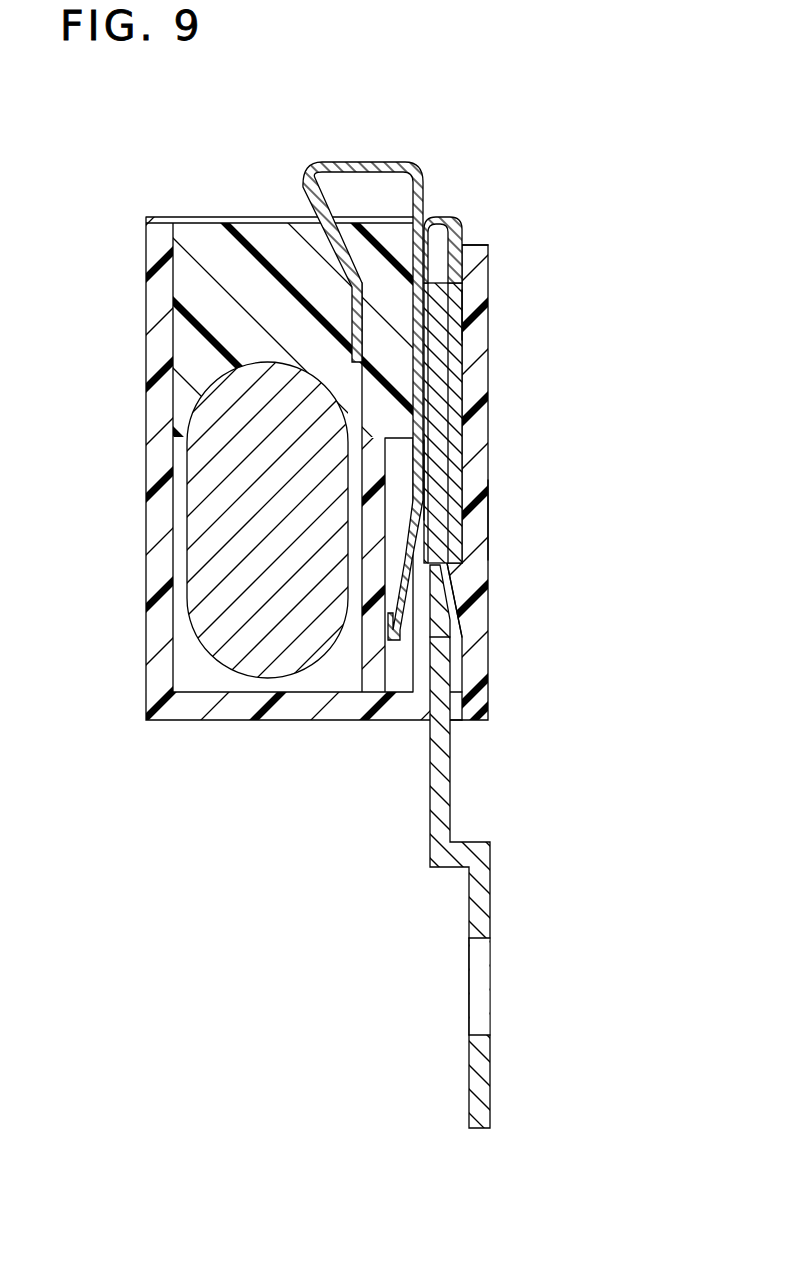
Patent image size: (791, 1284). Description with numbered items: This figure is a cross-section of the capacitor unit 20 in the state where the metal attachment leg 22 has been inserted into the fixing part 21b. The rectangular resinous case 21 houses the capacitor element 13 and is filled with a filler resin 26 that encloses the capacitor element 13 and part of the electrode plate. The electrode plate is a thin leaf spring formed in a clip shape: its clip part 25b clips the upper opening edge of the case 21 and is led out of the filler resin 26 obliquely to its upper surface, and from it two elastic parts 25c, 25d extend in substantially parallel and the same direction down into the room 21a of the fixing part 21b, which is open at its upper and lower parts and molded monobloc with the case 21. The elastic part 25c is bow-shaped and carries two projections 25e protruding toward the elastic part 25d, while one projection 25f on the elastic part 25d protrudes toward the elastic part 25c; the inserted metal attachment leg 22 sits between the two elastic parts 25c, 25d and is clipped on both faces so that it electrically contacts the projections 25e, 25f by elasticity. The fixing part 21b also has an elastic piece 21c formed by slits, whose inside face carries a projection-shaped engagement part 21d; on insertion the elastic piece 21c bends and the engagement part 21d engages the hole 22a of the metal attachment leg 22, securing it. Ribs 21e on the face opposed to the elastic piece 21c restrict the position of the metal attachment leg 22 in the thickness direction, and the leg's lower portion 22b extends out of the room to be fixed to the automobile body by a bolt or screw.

The capacitor unit 20 is at (140, 282).
The case 21 is at (155, 356).
The room 21a is at (432, 257).
The fixing part 21b is at (478, 388).
The elastic piece 21c is at (480, 508).
The engagement part 21d is at (448, 593).
The ribs 21e is at (414, 645).
The filler resin 26 is at (214, 253).
The capacitor element 13 is at (250, 655).
The clip part 25b is at (345, 163).
The elastic part 25c is at (455, 350).
The elastic part 25d is at (449, 222).
The projections 25e is at (432, 478).
The projection 25f is at (458, 318).
The metal attachment leg 22 is at (490, 848).
The hole 22a is at (438, 625).
The terminal lead portion 22b is at (470, 990).